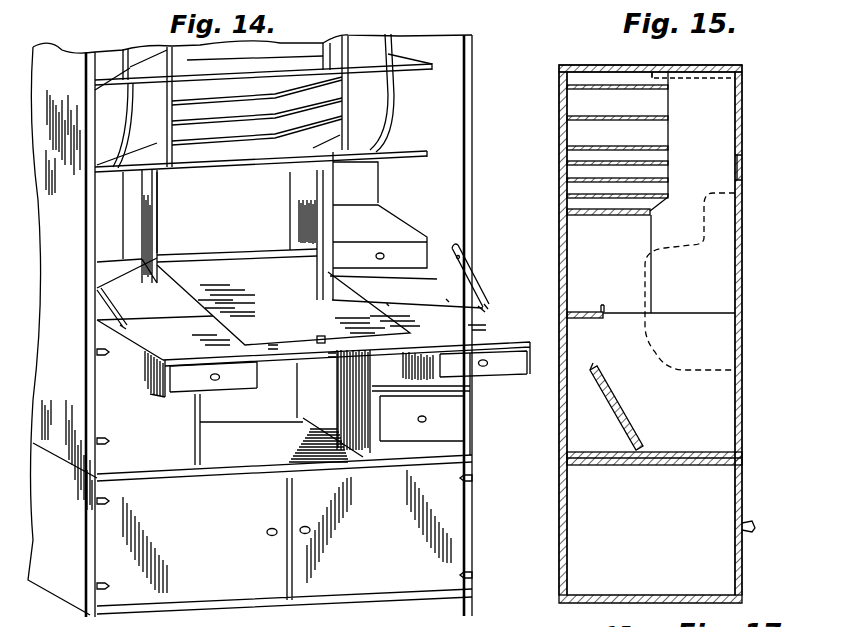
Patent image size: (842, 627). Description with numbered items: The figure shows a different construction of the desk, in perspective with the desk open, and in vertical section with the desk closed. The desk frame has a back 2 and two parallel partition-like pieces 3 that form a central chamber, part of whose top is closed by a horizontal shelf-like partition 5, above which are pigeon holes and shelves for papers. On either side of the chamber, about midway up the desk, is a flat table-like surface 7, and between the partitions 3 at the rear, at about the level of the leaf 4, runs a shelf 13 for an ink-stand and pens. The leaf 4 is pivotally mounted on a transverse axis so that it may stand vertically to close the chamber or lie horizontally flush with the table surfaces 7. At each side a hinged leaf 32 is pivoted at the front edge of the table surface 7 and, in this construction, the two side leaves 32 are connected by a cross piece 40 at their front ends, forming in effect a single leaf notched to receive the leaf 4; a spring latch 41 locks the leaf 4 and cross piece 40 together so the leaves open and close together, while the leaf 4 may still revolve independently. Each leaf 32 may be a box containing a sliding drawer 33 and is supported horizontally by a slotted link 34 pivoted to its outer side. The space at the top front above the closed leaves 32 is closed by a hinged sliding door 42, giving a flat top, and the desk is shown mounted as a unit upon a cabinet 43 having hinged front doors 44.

In FIG. 14, the back 2 is at (223, 212).
In FIG. 15, the back 2 is at (567, 260).
In FIG. 14, the partition-like pieces 3 is at (231, 235).
In FIG. 15, the partition-like pieces 3 is at (643, 192).
In FIG. 14, the leaf 4 is at (321, 305).
In FIG. 15, the leaf 4 is at (742, 270).
In FIG. 14, the shelf-like partition 5 is at (232, 162).
In FIG. 15, the shelf-like partition 5 is at (600, 214).
In FIG. 14, the table-like surface 7 is at (290, 240).
In FIG. 15, the table-like surface 7 is at (691, 311).
In FIG. 14, the shelf 13 is at (193, 253).
In FIG. 15, the shelf 13 is at (580, 312).
In FIG. 14, the hinged leaf 32 is at (313, 342).
In FIG. 14, the sliding drawer 33 is at (175, 383).
In FIG. 14, the slotted link 34 is at (97, 303).
In FIG. 14, the cross piece 40 is at (275, 349).
In FIG. 15, the cross piece 40 is at (742, 163).
In FIG. 14, the spring latch 41 is at (321, 350).
In FIG. 15, the hinged sliding door 42 is at (742, 110).
In FIG. 14, the cabinet 43 is at (62, 331).
In FIG. 14, the hinged front doors 44 is at (284, 542).